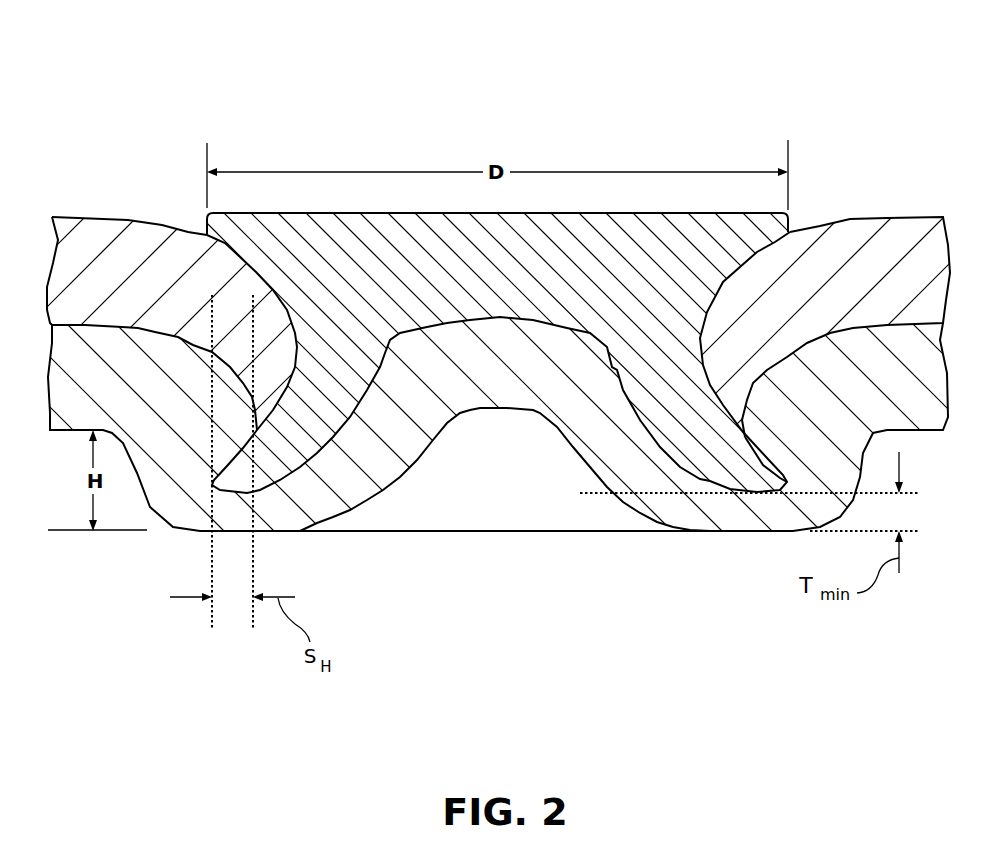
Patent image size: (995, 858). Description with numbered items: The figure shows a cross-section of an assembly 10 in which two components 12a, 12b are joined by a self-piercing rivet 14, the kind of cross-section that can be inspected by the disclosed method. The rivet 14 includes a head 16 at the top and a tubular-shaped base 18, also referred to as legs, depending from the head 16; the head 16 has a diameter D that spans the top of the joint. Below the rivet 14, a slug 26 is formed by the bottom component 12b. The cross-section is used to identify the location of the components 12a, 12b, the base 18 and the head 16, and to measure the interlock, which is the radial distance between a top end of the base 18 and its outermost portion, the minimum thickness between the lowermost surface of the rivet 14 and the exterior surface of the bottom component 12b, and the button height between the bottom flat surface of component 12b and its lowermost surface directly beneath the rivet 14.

The assembly 10 is at (867, 72).
The component 12a is at (895, 242).
The component 12b is at (928, 412).
The rivet 14 is at (680, 205).
The head 16 is at (592, 213).
The base 18 is at (728, 456).
The slug 26 is at (477, 400).